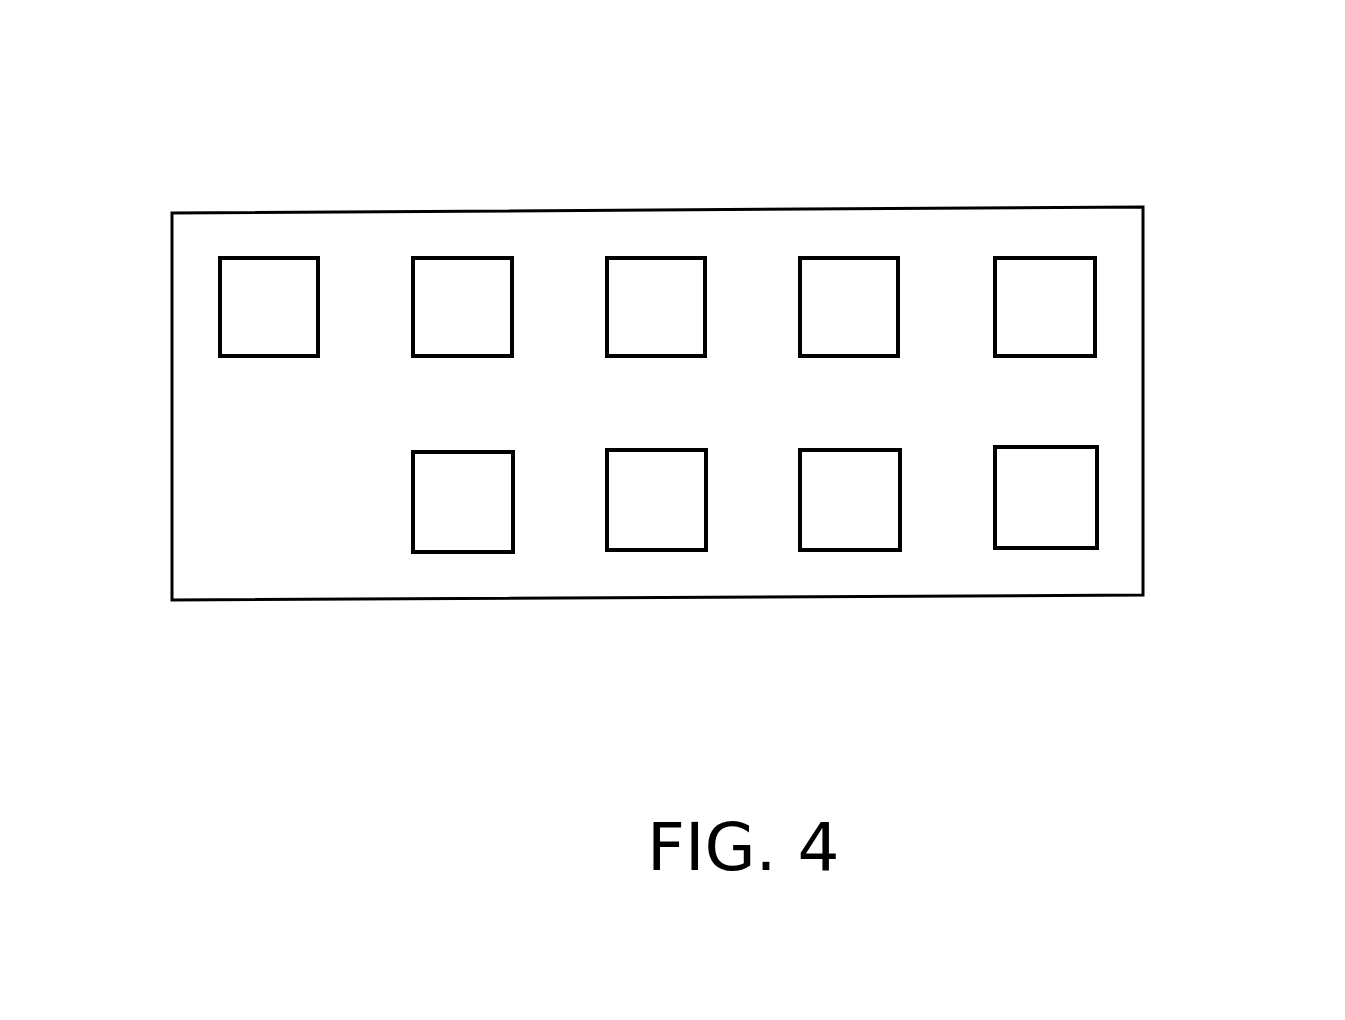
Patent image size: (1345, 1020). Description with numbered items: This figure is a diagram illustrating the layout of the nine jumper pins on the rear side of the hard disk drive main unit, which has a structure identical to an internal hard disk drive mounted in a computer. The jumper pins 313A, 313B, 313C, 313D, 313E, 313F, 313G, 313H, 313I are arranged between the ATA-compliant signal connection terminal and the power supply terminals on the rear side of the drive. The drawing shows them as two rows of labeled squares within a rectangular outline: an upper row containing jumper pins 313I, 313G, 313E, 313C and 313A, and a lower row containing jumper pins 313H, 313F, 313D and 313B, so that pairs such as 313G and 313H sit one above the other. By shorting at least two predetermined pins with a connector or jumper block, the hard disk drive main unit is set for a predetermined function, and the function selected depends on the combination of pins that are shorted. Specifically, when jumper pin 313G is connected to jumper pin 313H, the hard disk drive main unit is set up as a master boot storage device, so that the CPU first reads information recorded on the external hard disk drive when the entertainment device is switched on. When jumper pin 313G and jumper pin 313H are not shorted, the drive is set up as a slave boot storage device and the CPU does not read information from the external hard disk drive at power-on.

The jumper pin 313A is at (1050, 258).
The jumper pin 313B is at (1097, 498).
The jumper pin 313C is at (850, 258).
The jumper pin 313D is at (855, 550).
The jumper pin 313E is at (661, 258).
The jumper pin 313F is at (662, 550).
The jumper pin 313G is at (467, 258).
The jumper pin 313H is at (462, 552).
The jumper pin 313I is at (267, 258).